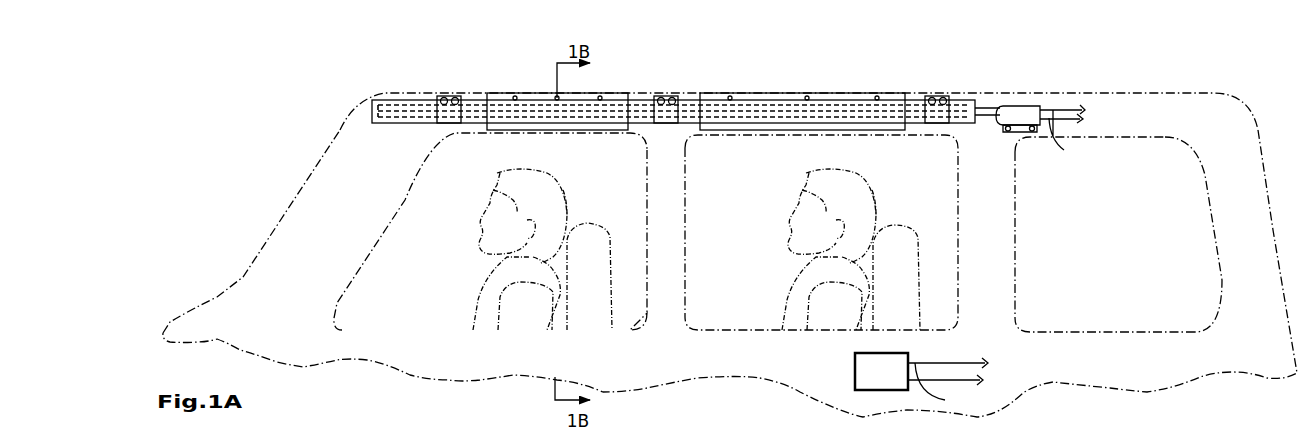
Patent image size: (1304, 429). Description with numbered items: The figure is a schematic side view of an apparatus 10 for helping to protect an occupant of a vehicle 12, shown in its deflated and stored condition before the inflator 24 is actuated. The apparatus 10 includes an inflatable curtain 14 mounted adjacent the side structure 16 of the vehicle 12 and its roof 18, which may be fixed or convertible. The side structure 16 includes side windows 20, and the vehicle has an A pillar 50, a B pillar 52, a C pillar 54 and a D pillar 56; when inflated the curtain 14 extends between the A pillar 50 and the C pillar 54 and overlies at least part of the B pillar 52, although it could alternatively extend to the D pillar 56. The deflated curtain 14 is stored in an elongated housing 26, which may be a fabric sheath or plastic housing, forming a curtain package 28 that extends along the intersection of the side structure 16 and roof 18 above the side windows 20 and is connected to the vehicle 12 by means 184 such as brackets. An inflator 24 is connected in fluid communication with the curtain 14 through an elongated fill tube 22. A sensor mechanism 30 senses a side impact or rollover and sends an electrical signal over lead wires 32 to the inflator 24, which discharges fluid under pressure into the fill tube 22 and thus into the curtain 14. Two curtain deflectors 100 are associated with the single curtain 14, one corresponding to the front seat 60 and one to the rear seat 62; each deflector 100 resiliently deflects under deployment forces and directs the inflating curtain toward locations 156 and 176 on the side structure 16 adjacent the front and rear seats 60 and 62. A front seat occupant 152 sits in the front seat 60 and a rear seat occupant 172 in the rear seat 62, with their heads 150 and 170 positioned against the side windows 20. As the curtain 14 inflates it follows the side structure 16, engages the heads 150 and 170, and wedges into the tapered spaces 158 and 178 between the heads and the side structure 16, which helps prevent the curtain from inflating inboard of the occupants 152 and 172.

The apparatus 10 is at (303, 83).
The vehicle 12 is at (328, 63).
The inflatable curtain 14 is at (399, 101).
The side structure 16 is at (647, 368).
The roof 18 is at (690, 93).
The side windows 20 is at (417, 307).
The fill tube 22 is at (985, 110).
The inflator 24 is at (1018, 107).
The housing 26 is at (421, 100).
The curtain package 28 is at (384, 133).
The sensor mechanism 30 is at (870, 372).
The lead wires 32 is at (996, 258).
The A pillar 50 is at (315, 226).
The B pillar 52 is at (667, 238).
The C pillar 54 is at (1008, 223).
The D pillar 56 is at (1240, 230).
The front seat 60 is at (588, 240).
The rear seat 62 is at (907, 242).
The curtain deflector 100 is at (530, 97).
The head of front seat occupant 150 is at (553, 174).
The front seat occupant 152 is at (450, 280).
The location 156 is at (522, 152).
The space 158 is at (545, 198).
The head of rear seat occupant 170 is at (847, 173).
The rear seat occupant 172 is at (752, 230).
The location 176 is at (820, 152).
The space 178 is at (857, 198).
The means 184 is at (448, 96).